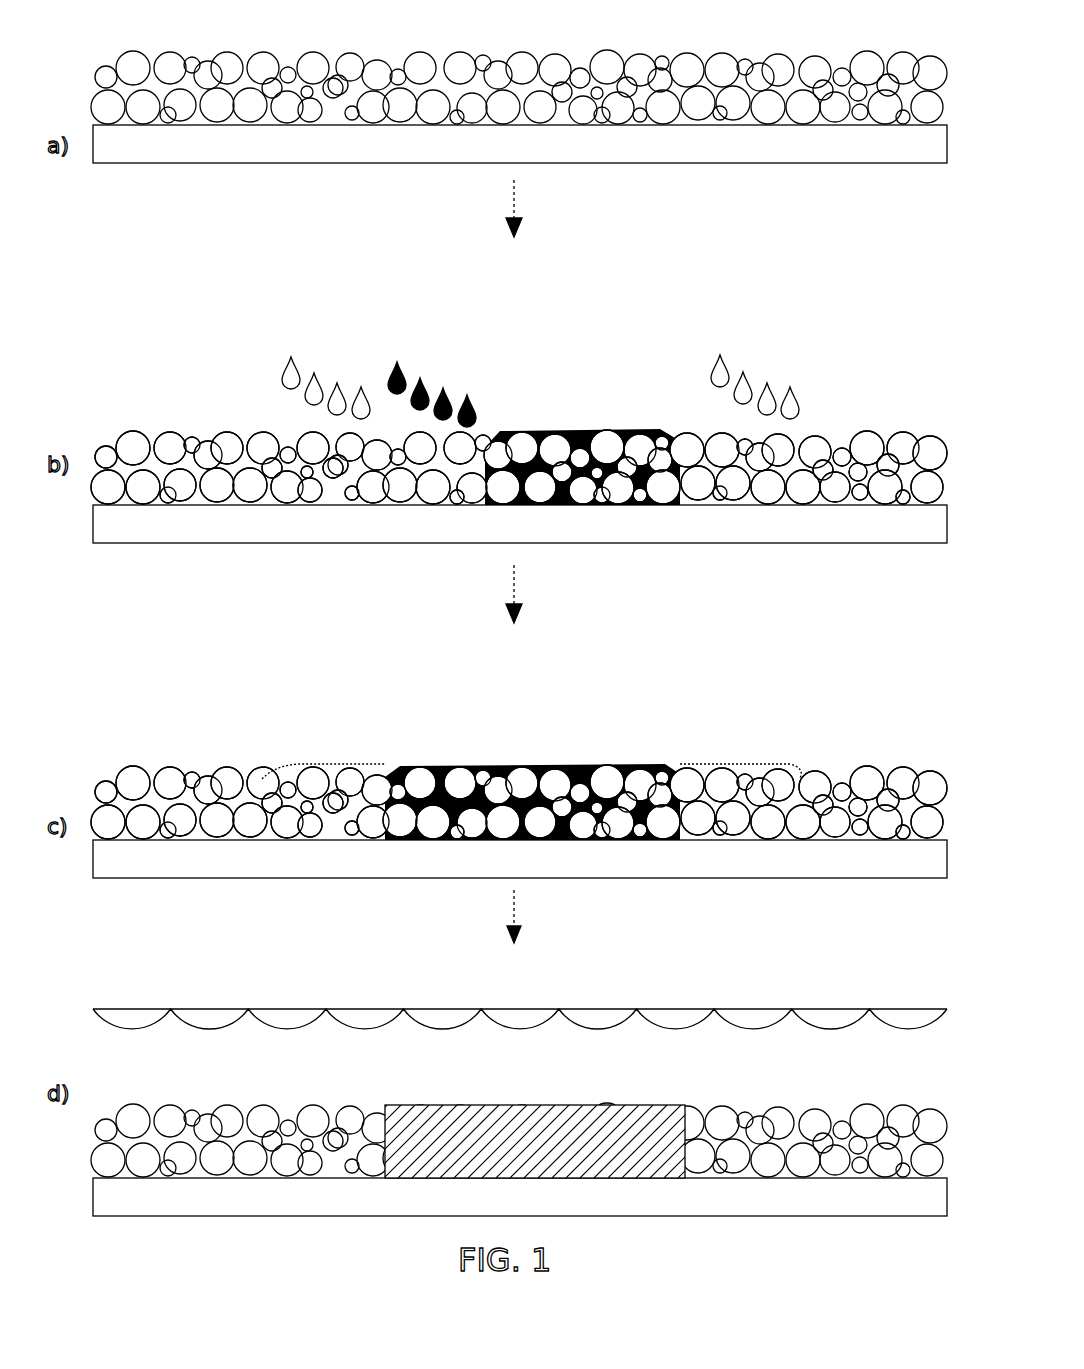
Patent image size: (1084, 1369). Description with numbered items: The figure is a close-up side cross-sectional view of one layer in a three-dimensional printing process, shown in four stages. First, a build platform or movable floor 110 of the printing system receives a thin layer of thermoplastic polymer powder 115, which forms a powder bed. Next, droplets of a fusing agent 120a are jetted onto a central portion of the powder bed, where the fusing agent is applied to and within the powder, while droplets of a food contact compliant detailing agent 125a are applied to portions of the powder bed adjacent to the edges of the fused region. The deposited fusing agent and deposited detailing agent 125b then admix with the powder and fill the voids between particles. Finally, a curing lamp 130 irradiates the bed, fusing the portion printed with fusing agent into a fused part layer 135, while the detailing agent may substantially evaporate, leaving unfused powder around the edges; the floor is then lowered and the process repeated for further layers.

The build platform or movable floor 110 is at (541, 154).
The thermoplastic polymer powder 115 is at (134, 63).
The droplets of fusing agent 120a is at (389, 378).
The droplets of detailing agent 125a is at (287, 373).
The deposited detailing agent 125b is at (284, 762).
The curing lamp 130 is at (283, 1022).
The fused part layer 135 is at (578, 1130).